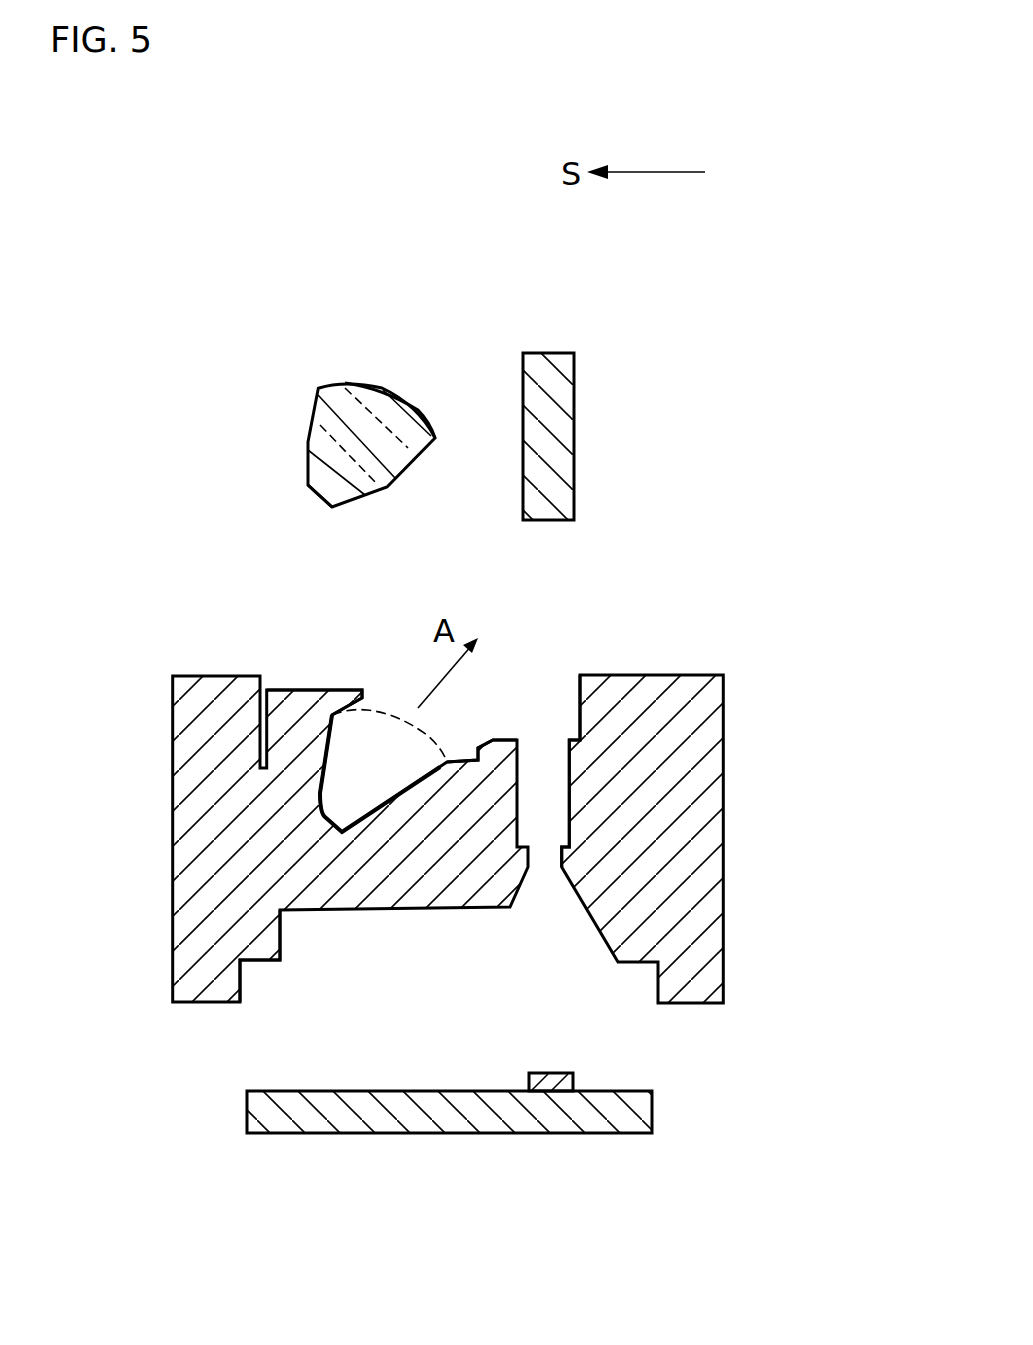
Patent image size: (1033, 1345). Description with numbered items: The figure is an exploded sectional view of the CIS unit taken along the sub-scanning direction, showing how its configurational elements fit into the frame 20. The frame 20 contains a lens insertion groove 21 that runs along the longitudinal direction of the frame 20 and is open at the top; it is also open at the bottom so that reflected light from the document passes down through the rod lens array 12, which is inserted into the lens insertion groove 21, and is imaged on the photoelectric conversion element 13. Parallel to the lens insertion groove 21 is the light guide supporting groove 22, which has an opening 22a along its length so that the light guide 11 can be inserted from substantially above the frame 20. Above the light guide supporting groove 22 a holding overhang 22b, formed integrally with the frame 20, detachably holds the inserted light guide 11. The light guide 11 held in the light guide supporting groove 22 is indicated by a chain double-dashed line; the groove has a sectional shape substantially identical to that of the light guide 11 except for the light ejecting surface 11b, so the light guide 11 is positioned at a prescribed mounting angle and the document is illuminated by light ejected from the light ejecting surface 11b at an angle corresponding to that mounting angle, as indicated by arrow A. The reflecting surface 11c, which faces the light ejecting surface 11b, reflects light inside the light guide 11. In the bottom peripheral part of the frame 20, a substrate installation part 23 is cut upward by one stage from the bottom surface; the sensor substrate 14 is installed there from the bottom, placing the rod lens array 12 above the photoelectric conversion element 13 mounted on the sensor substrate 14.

The light guide 11 is at (318, 397).
The light ejecting surface 11b is at (405, 386).
The reflecting surface 11c is at (315, 497).
The rod lens array 12 is at (574, 417).
The photoelectric conversion element 13 is at (547, 1072).
The sensor substrate 14 is at (623, 1133).
The frame 20 is at (723, 745).
The lens insertion groove 21 is at (540, 763).
The light guide supporting groove 22 is at (391, 755).
The opening 22a is at (441, 732).
The holding overhang 22b is at (360, 688).
The substrate installation part 23 is at (262, 965).